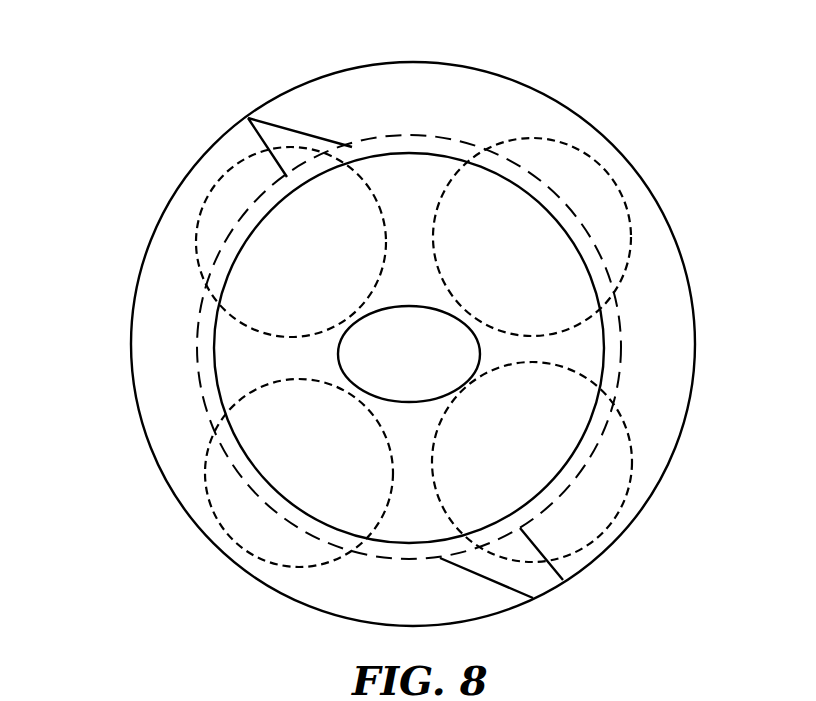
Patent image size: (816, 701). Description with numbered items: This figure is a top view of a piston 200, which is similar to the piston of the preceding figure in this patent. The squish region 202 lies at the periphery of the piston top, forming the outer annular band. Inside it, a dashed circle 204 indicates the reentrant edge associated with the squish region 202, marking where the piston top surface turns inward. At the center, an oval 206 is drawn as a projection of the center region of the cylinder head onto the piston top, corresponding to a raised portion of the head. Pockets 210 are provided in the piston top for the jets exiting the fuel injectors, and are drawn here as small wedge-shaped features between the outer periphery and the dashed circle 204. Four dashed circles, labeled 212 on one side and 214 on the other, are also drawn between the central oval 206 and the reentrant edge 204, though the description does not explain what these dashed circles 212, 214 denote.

The piston 200 is at (633, 162).
The squish region 202 is at (168, 387).
The dashed circle 204 is at (205, 412).
The oval 206 is at (413, 376).
The pockets 210 is at (250, 134).
The circular recess (right) 212 is at (629, 211).
The circular recess (left) 214 is at (198, 232).